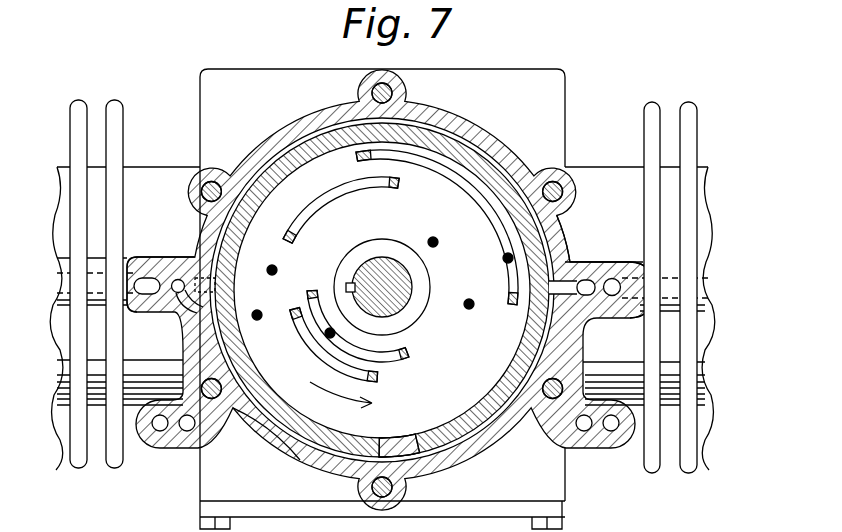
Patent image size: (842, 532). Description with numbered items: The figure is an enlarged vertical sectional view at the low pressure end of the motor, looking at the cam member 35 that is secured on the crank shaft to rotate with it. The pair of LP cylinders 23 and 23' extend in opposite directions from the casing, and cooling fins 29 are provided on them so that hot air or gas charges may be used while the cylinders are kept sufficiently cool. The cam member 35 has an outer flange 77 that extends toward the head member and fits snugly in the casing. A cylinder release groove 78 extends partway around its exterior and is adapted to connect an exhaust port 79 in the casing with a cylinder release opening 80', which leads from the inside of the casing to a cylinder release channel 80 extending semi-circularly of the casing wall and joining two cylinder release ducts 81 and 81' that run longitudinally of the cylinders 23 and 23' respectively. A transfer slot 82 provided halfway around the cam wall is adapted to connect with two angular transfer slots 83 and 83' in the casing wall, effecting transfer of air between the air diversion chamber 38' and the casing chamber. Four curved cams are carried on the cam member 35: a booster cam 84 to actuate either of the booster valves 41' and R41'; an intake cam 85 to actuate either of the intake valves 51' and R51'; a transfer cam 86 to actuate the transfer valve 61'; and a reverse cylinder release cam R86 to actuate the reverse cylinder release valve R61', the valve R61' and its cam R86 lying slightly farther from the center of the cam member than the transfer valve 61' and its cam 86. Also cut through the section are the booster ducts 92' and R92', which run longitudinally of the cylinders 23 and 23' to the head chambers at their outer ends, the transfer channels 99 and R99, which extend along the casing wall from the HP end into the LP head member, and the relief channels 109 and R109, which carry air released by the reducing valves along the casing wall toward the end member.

The LP cylinder 23 is at (640, 299).
The LP cylinder 23' is at (125, 294).
The cooling fins 29 is at (110, 112).
The cam member 35 is at (254, 431).
The air diversion chamber 38' is at (403, 308).
The booster valve 41' is at (451, 241).
The intake valve 51' is at (489, 268).
The transfer valve 61' is at (472, 317).
The outer flange 77 is at (511, 196).
The cylinder release groove 78 is at (497, 131).
The exhaust port 79 is at (553, 262).
The cylinder release channel 80 is at (374, 292).
The cylinder release opening 80' is at (545, 286).
The cylinder release duct 81 is at (591, 311).
The cylinder release duct 81' is at (177, 309).
The transfer slot 82 is at (338, 440).
The angular transfer slot 83 is at (614, 273).
The angular transfer slot 83' is at (161, 270).
The booster cam 84 is at (407, 355).
The intake cam 85 is at (478, 205).
The transfer cam 86 is at (380, 379).
The booster duct 92' is at (618, 316).
The transfer channel 99 is at (584, 432).
The relief channel 109 is at (611, 432).
The booster valve R41' is at (358, 326).
The intake valve R51' is at (261, 305).
The reverse cylinder release valve R61' is at (293, 263).
The reverse cylinder release cam R86 is at (333, 192).
The booster duct R92' is at (143, 261).
The transfer channel R99 is at (187, 432).
The relief channel R109 is at (158, 432).